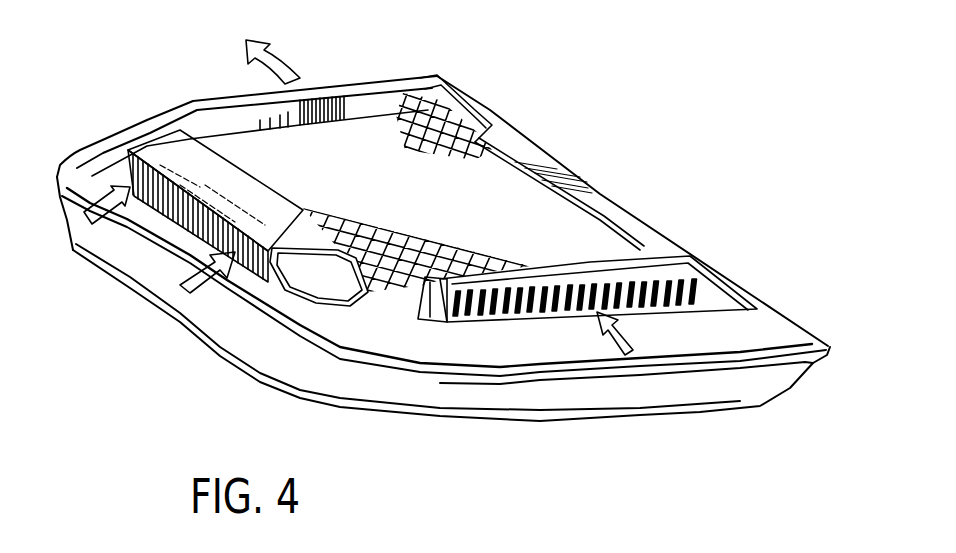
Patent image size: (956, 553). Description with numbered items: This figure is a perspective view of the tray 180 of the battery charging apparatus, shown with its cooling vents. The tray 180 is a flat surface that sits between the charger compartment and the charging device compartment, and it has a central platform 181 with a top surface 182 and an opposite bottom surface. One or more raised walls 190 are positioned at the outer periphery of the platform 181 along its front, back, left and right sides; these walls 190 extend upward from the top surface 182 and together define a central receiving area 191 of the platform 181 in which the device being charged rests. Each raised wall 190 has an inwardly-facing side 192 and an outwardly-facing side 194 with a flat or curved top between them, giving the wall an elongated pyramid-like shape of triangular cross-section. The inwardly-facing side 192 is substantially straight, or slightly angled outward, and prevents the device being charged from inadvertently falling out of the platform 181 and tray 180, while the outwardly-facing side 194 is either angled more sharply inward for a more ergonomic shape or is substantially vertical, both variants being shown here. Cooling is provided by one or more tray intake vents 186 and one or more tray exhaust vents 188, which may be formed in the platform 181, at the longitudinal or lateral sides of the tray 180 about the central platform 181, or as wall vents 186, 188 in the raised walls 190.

The tray 180 is at (598, 145).
The central platform 181 is at (573, 252).
The top surface 182 is at (455, 170).
The tray intake vent 186 is at (703, 296).
The tray exhaust vent 188 is at (193, 97).
The raised wall 190 is at (366, 68).
The central receiving area 191 is at (577, 188).
The inwardly-facing side 192 is at (413, 100).
The outwardly-facing side 194 is at (630, 257).